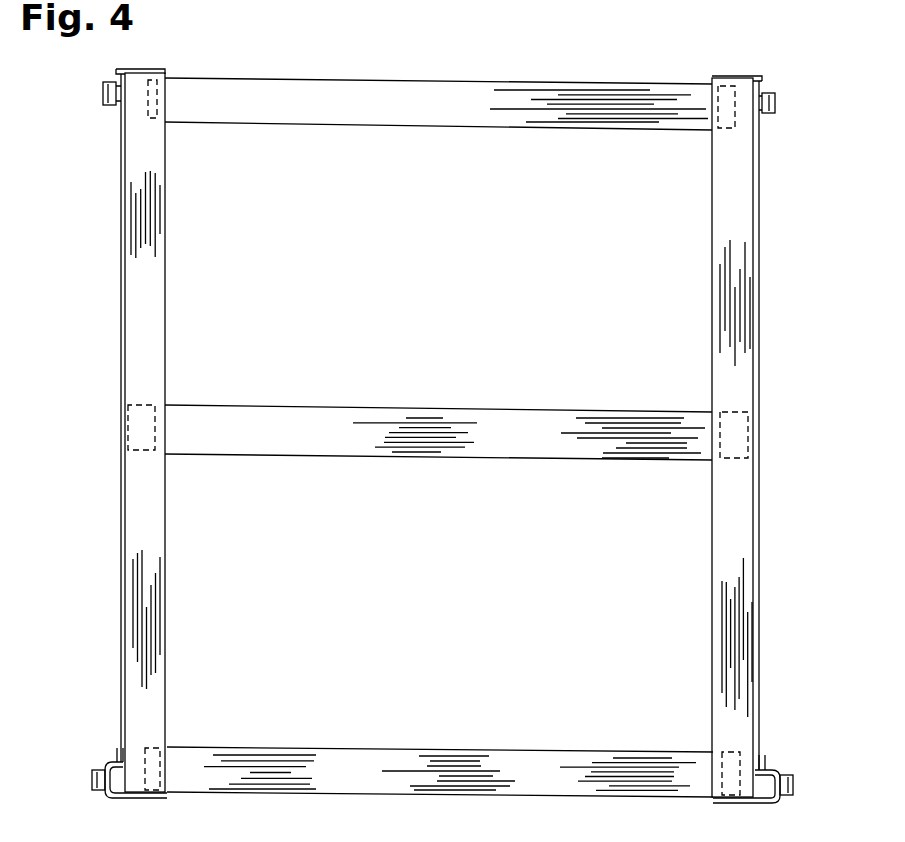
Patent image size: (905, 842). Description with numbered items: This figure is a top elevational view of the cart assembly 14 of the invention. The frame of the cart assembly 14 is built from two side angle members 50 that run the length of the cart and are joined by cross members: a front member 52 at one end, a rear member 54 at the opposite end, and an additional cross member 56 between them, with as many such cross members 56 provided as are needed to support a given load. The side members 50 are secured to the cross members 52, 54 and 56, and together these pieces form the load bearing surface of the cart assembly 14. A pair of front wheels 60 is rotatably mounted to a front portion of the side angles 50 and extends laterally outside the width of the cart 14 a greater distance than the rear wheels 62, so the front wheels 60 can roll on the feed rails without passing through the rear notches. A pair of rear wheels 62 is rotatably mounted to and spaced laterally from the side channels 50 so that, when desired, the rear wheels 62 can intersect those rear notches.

The cart assembly 14 is at (223, 70).
The side angle members 50 is at (122, 580).
The front member 52 is at (336, 796).
The rear member 54 is at (406, 80).
The cross members 56 is at (486, 415).
The front wheels 60 is at (92, 778).
The rear wheels 62 is at (103, 96).